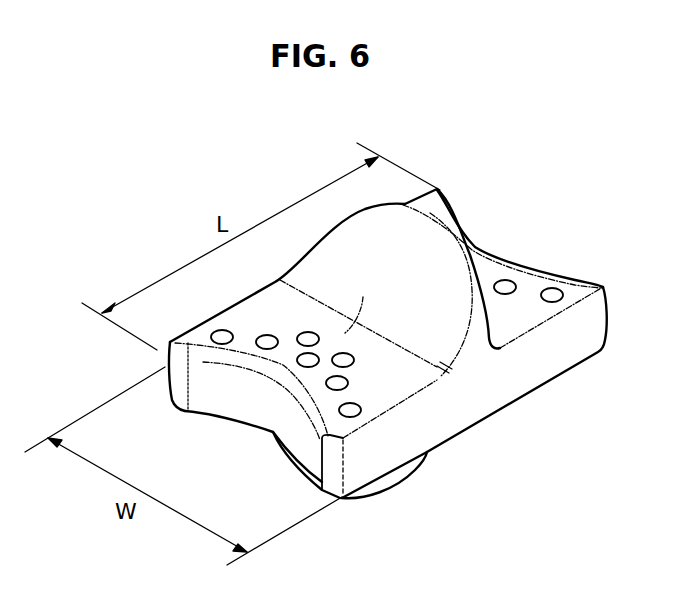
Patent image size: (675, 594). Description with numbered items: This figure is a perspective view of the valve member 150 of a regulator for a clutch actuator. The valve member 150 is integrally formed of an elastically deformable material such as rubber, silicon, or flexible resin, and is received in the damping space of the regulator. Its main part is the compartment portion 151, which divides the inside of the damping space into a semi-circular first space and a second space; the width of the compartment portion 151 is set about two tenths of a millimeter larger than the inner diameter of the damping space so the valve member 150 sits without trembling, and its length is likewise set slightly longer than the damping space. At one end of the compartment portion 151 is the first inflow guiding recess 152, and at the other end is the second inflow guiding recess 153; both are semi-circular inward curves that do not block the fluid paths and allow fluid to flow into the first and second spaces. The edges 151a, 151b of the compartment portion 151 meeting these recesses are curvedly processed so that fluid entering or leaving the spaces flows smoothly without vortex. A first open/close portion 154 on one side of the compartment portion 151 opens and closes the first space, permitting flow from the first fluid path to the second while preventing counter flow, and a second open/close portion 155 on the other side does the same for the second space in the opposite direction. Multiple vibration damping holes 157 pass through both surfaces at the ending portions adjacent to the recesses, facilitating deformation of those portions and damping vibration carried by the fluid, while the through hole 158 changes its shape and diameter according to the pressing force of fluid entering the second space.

The valve member 150 is at (319, 166).
The compartment portion 151 is at (400, 378).
The edge of the compartment portion 151a is at (272, 352).
The edge of the compartment portion 151b is at (555, 277).
The first inflow guiding recess 152 is at (220, 416).
The second inflow guiding recess 153 is at (485, 250).
The first open/close portion 154 is at (415, 240).
The second open/close portion 155 is at (380, 486).
The vibration damping holes 157 is at (308, 333).
The through hole 158 is at (505, 282).